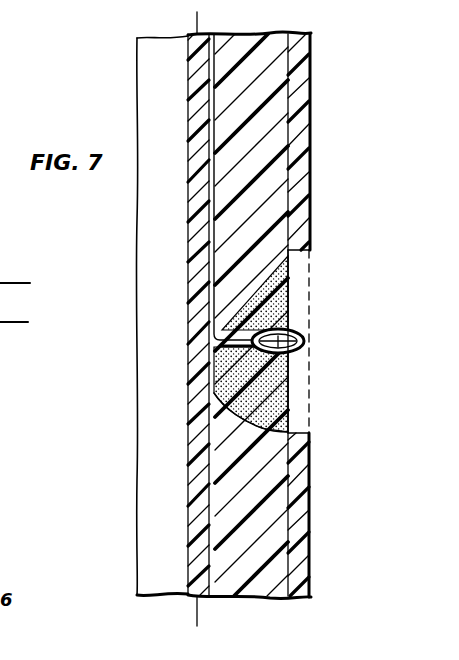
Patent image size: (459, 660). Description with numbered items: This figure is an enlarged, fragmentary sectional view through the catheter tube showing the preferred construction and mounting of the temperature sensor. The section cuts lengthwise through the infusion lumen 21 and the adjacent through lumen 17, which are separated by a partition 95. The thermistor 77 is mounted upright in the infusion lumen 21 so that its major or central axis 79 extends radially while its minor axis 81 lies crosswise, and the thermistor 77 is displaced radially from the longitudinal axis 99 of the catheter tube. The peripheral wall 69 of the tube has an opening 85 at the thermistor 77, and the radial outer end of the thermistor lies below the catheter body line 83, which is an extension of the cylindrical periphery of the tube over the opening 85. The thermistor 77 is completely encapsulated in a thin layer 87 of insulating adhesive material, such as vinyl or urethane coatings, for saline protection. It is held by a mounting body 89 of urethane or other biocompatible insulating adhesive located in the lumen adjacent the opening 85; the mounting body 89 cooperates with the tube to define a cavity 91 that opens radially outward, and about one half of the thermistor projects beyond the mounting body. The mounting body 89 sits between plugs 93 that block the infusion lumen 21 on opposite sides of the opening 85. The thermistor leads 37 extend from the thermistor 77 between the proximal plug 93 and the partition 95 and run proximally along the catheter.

The through lumen 17 is at (150, 320).
The infusion lumen 21 is at (281, 60).
The thermistor leads 37 is at (205, 82).
The peripheral wall 69 is at (300, 153).
The thermistor 77 is at (288, 334).
The major axis 79 is at (305, 343).
The minor axis 81 is at (292, 366).
The catheter body line 83 is at (312, 421).
The opening 85 is at (299, 251).
The thin layer of insulating adhesive material 87 is at (272, 355).
The mounting body 89 is at (262, 420).
The cavity 91 is at (298, 392).
The plugs 93 is at (268, 118).
The partition 95 is at (200, 229).
The longitudinal axis 99 is at (198, 609).